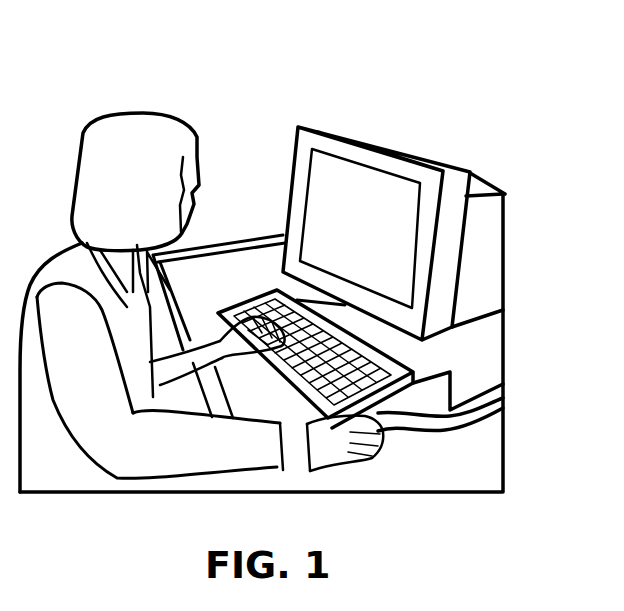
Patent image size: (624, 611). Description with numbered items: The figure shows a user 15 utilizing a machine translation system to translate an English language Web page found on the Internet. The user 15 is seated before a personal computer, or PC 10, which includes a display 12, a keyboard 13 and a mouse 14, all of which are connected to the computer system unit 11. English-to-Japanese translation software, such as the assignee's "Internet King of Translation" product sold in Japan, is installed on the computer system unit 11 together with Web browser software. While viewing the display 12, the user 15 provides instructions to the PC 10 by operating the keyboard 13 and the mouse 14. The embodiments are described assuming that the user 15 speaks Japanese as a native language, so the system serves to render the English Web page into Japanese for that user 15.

The personal computer 10 is at (470, 105).
The computer system unit 11 is at (477, 337).
The display 12 is at (364, 188).
The keyboard 13 is at (256, 288).
The mouse 14 is at (470, 420).
The user 15 is at (82, 148).